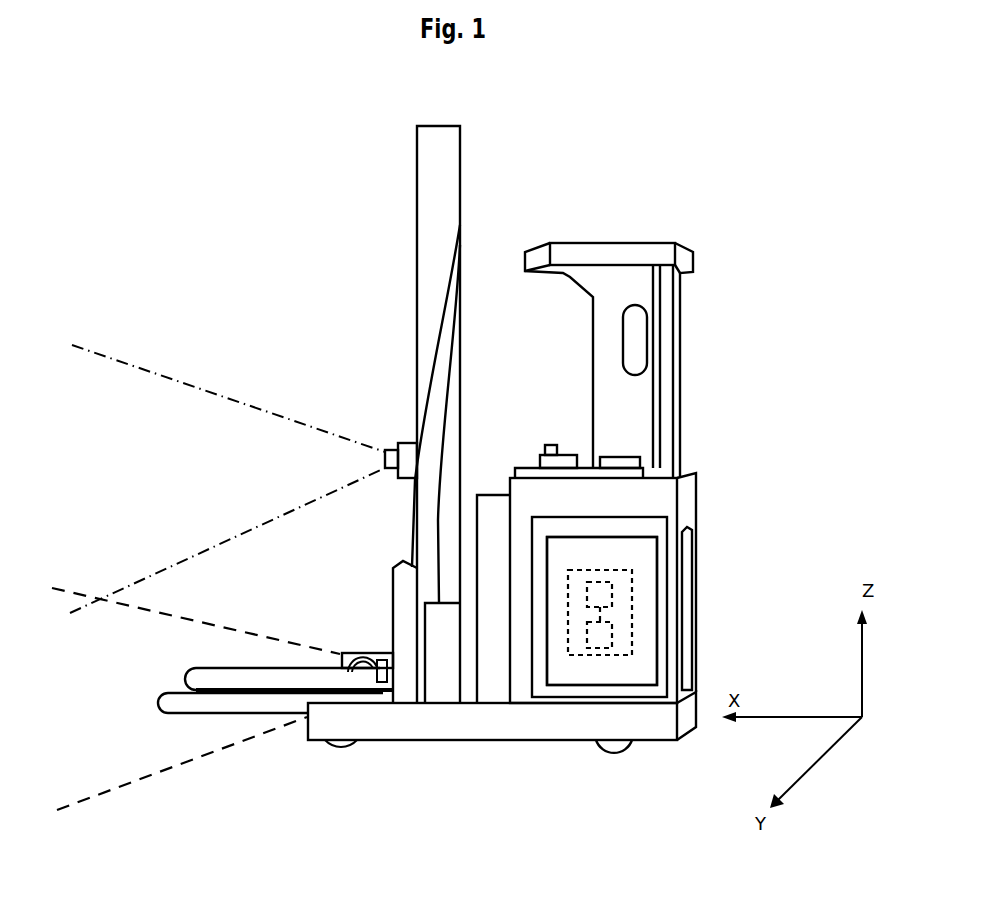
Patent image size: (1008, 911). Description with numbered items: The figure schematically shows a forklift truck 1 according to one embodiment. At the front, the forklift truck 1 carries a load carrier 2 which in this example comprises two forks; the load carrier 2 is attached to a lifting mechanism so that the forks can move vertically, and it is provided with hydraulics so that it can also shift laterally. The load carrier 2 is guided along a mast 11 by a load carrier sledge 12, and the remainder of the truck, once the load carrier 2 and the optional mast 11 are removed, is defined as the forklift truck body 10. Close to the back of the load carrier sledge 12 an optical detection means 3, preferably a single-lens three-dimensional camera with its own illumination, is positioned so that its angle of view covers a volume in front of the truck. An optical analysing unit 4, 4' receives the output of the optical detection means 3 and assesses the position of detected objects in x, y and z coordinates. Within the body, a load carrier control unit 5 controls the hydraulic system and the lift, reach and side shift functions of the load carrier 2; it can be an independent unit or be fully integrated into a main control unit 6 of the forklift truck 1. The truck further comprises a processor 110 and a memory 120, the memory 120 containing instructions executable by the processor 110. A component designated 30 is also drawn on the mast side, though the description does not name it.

The forklift truck 1 is at (329, 330).
The load carrier 2 is at (223, 670).
The optical detection means 3 is at (367, 690).
The optical analysing unit 4 is at (305, 716).
The optical analysing unit 4' is at (677, 585).
The load carrier control unit 5 is at (638, 668).
The main control unit 6 is at (643, 527).
The forklift truck body 10 is at (497, 640).
The mast 11 is at (425, 250).
The load carrier sledge 12 is at (405, 658).
The camera 30 is at (384, 450).
The processor 110 is at (602, 582).
The memory 120 is at (603, 637).